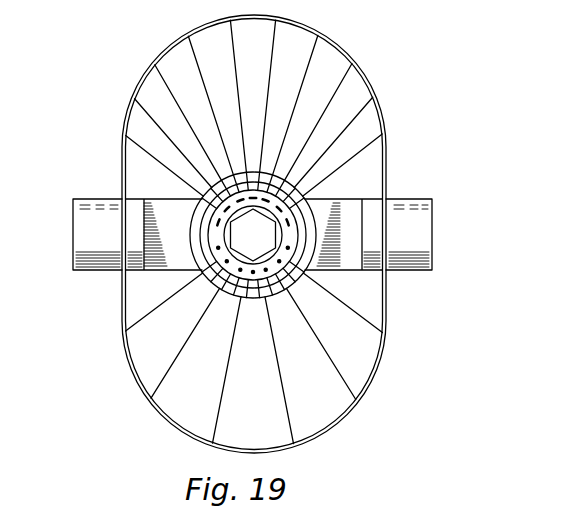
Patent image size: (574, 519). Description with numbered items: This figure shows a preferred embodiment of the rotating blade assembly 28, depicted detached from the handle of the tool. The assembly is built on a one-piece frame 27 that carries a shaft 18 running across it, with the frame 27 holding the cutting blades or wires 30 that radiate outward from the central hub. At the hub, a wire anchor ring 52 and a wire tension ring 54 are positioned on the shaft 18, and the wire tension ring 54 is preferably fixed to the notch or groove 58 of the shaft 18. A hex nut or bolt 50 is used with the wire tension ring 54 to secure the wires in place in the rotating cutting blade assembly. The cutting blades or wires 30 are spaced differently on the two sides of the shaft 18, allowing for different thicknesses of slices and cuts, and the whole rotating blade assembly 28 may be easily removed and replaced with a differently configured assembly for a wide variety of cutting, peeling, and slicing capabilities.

The shaft 18 is at (92, 206).
The frame 27 is at (380, 358).
The rotating blade assembly 28 is at (148, 59).
The cutting blades or wires 30 is at (352, 128).
The hex nut or bolt 50 is at (300, 285).
The wire anchor ring 52 is at (212, 286).
The wire tension ring 54 is at (268, 273).
The notch or groove 58 is at (173, 258).